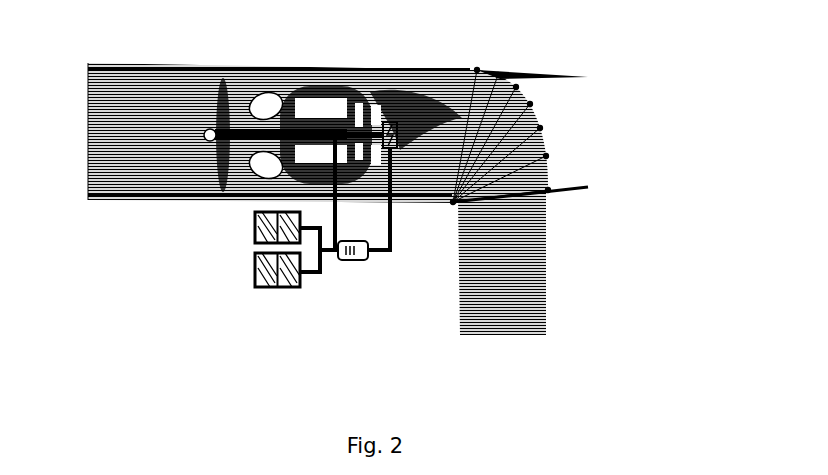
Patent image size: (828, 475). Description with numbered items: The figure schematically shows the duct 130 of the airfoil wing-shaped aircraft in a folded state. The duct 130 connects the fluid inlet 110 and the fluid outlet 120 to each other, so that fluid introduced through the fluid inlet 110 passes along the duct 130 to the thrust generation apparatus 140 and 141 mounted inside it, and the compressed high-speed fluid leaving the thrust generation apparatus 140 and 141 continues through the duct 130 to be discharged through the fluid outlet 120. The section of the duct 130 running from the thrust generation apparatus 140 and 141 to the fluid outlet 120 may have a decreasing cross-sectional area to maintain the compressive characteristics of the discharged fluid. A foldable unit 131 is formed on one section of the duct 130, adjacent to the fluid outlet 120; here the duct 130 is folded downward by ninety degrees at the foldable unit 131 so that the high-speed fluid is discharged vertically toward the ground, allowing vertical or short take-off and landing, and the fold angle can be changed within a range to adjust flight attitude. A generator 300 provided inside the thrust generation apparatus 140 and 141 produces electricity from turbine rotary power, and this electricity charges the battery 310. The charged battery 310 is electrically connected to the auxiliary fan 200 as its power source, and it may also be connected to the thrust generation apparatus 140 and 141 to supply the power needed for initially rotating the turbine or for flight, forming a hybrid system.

The fluid inlet 110 is at (90, 143).
The fluid outlet 120 is at (508, 330).
The duct 130 is at (180, 105).
The foldable unit 131 is at (540, 117).
The thrust generation apparatus 140 is at (280, 93).
The thrust generation apparatus 141 is at (217, 168).
The auxiliary fan 200 is at (255, 245).
The generator 300 is at (395, 122).
The battery 310 is at (368, 258).